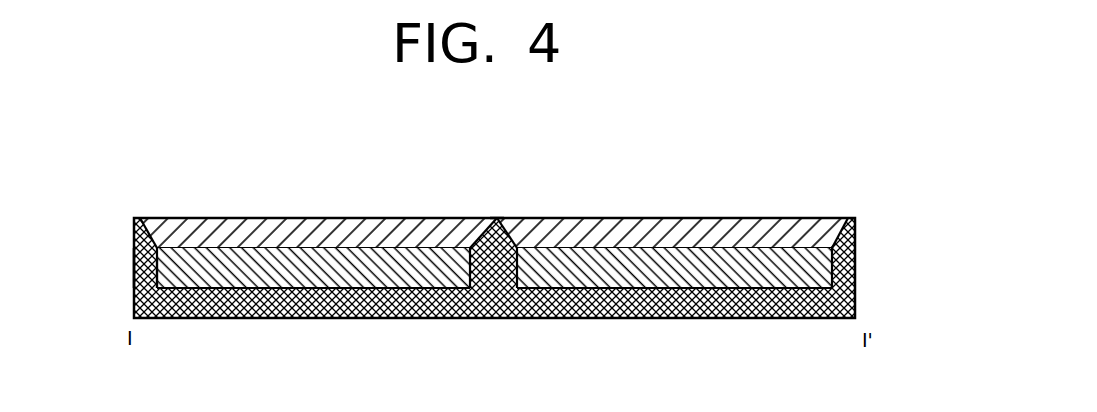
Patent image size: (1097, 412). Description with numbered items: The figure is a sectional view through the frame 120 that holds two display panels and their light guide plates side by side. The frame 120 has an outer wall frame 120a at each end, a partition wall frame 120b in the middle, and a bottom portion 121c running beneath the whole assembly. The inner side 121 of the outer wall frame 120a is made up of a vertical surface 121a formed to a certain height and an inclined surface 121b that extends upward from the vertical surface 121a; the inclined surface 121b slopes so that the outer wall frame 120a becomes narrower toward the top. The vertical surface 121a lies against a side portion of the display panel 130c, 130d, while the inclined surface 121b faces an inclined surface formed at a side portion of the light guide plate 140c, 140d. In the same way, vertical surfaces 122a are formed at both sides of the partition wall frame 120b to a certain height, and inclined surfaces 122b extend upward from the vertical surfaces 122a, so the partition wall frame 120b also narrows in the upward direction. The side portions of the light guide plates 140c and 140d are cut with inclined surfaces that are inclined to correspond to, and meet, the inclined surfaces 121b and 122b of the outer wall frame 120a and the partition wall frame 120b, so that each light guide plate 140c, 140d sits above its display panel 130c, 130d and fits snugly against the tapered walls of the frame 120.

The frame 120 is at (499, 253).
The outer wall frame 120a is at (145, 270).
The partition wall frame 120b is at (496, 218).
The inner side of the outer wall frame 121 is at (832, 277).
The vertical surface 121a is at (157, 277).
The inclined surface 121b is at (152, 219).
The bottom portion of the outer wall frame 121c is at (381, 297).
The vertical surfaces 122a is at (470, 277).
The inclined surfaces 122b is at (452, 219).
The display panel 130c is at (672, 276).
The display panel 130d is at (317, 276).
The light guide plate 140c is at (687, 228).
The light guide plate 140d is at (283, 219).